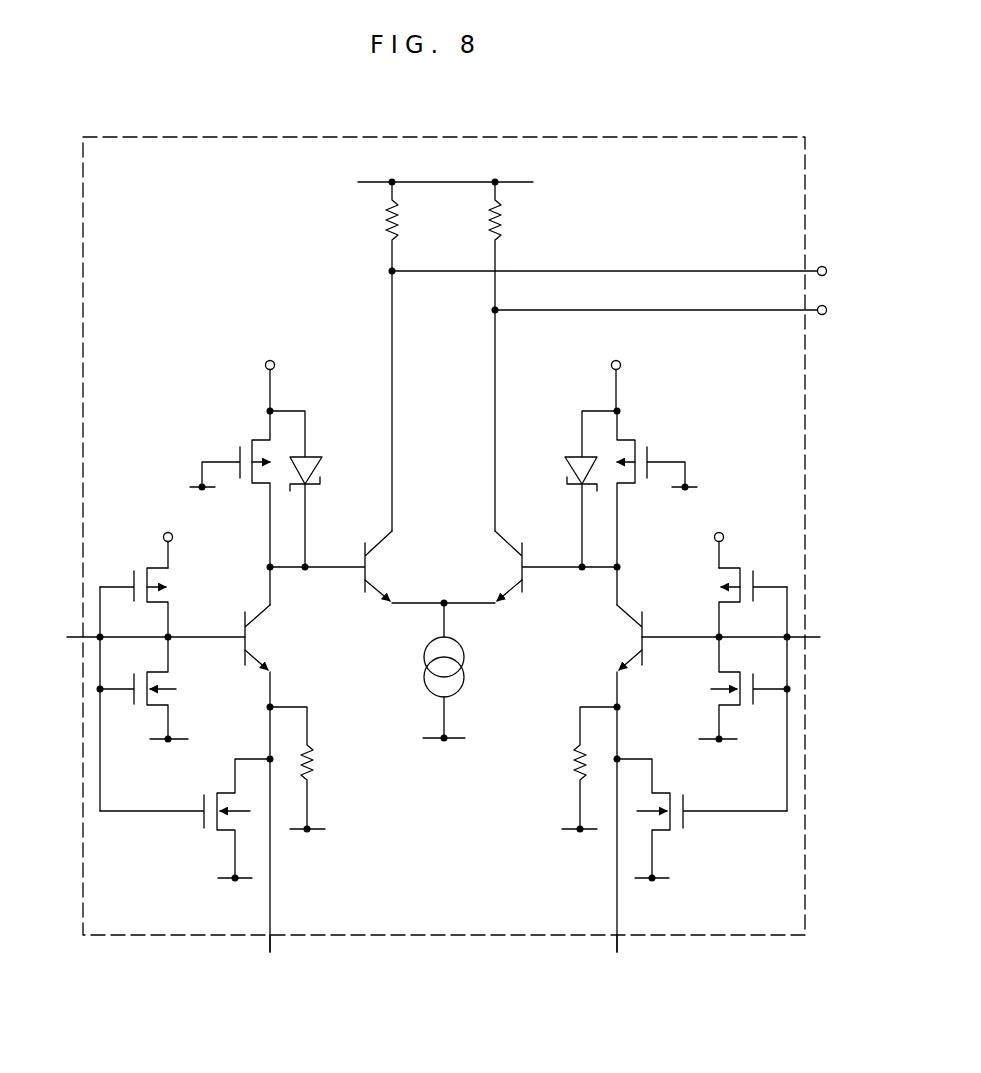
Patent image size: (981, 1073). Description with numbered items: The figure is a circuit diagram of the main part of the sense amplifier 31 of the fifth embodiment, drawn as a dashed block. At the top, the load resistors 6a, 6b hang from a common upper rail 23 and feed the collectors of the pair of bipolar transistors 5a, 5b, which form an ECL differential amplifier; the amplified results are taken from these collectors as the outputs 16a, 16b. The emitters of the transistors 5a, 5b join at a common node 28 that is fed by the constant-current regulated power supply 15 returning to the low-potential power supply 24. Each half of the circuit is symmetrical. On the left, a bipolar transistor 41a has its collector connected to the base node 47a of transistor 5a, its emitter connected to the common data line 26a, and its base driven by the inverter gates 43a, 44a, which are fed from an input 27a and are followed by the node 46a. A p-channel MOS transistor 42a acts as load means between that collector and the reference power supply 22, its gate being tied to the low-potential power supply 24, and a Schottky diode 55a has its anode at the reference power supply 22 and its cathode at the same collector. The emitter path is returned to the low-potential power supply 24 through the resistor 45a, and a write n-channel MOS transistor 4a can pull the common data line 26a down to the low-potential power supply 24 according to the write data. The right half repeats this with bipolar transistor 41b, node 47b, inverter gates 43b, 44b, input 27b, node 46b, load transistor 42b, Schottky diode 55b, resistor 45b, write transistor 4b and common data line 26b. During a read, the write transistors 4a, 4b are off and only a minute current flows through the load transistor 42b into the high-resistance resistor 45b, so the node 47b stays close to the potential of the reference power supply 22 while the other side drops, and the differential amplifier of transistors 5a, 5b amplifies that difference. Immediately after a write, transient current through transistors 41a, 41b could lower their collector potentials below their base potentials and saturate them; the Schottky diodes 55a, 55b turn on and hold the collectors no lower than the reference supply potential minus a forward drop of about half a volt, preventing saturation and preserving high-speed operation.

The sense amplifier 31 is at (805, 237).
The power supply line 23 is at (445, 168).
The load resistor 6a is at (410, 356).
The load resistor 6b is at (513, 356).
The output 16a is at (632, 273).
The output 16b is at (684, 312).
The bipolar transistor 5a is at (374, 567).
The bipolar transistor 5b is at (513, 567).
The common emitter node 28 is at (462, 619).
The constant-current regulated power supply 15 is at (462, 687).
The VRS power supply 22 is at (446, 447).
The VEE power supply 24 is at (453, 694).
The p-channel MOS transistor 42a is at (238, 507).
The p-channel MOS transistor 42b is at (650, 507).
The Schottky diode 55a is at (321, 491).
The Schottky diode 55b is at (562, 491).
The connection node 47a is at (269, 541).
The node 47b is at (618, 533).
The inverter gate 43a is at (157, 602).
The inverter gate 43b is at (721, 602).
The inverter gate 44a is at (162, 688).
The inverter gate 44b is at (721, 688).
The bipolar transistor 41a is at (276, 778).
The bipolar transistor 41b is at (612, 778).
The inverter 46a is at (170, 641).
The inverter 46b is at (650, 641).
The input terminal 27a is at (127, 699).
The input terminal 27b is at (751, 699).
The resistor 45a is at (312, 767).
The resistor 45b is at (568, 767).
The write n-channel MOS transistor 4a is at (187, 817).
The write n-channel MOS transistor 4b is at (701, 817).
The common data line 26a is at (272, 958).
The common data line 26b is at (624, 959).